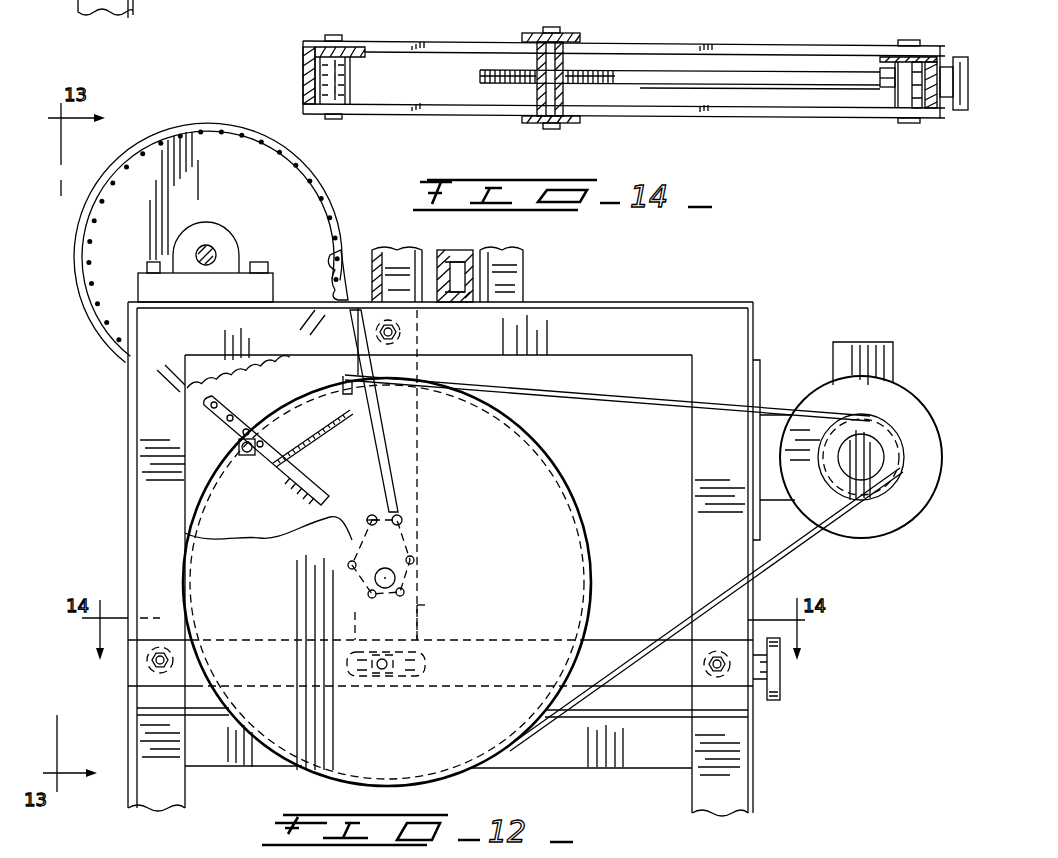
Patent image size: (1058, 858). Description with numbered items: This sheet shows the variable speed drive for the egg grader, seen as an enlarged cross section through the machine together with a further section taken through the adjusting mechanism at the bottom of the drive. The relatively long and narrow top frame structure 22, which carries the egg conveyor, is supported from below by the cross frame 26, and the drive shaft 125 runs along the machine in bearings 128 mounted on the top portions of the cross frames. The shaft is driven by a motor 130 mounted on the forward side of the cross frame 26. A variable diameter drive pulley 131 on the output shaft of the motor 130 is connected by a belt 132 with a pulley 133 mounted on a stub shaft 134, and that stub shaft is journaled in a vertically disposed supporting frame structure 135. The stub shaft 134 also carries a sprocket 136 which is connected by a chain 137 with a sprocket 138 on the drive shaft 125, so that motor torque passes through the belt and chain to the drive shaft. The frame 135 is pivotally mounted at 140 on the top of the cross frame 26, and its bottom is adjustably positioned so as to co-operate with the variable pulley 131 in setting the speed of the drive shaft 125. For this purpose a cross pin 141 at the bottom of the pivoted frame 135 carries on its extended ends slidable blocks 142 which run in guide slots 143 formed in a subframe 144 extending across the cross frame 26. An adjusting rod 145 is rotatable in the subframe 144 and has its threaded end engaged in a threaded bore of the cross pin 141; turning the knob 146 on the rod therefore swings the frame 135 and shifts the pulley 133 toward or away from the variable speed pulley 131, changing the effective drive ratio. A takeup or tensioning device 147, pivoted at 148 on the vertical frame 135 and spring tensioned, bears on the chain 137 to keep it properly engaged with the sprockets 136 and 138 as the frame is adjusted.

In FIG. 12, the top frame structure 22 is at (523, 276).
In FIG. 14, the cross frame 26 is at (303, 72).
In FIG. 12, the cross frame 26 is at (755, 322).
In FIG. 12, the drive shaft 125 is at (210, 244).
In FIG. 12, the bearings 128 is at (228, 242).
In FIG. 12, the motor 130 is at (821, 401).
In FIG. 12, the variable diameter drive pulley 131 is at (893, 472).
In FIG. 12, the belt 132 is at (617, 402).
In FIG. 12, the pulley 133 is at (565, 536).
In FIG. 12, the stub shaft 134 is at (396, 571).
In FIG. 14, the supporting frame structure 135 is at (567, 43).
In FIG. 12, the supporting frame structure 135 is at (420, 606).
In FIG. 12, the sprocket 136 is at (397, 550).
In FIG. 12, the chain 137 is at (393, 463).
In FIG. 12, the sprocket 138 is at (313, 242).
In FIG. 12, the pivot 140 is at (402, 332).
In FIG. 14, the cross pin 141 is at (538, 124).
In FIG. 12, the cross pin 141 is at (383, 676).
In FIG. 14, the slidable blocks 142 is at (536, 27).
In FIG. 12, the slidable blocks 142 is at (377, 673).
In FIG. 14, the guide slots 143 is at (524, 38).
In FIG. 12, the guide slots 143 is at (407, 676).
In FIG. 14, the subframe 144 is at (806, 113).
In FIG. 12, the subframe 144 is at (632, 620).
In FIG. 14, the adjusting rod 145 is at (751, 83).
In FIG. 14, the knob 146 is at (962, 57).
In FIG. 12, the knob 146 is at (775, 678).
In FIG. 12, the tensioning device 147 is at (270, 466).
In FIG. 12, the pivot 148 is at (405, 508).